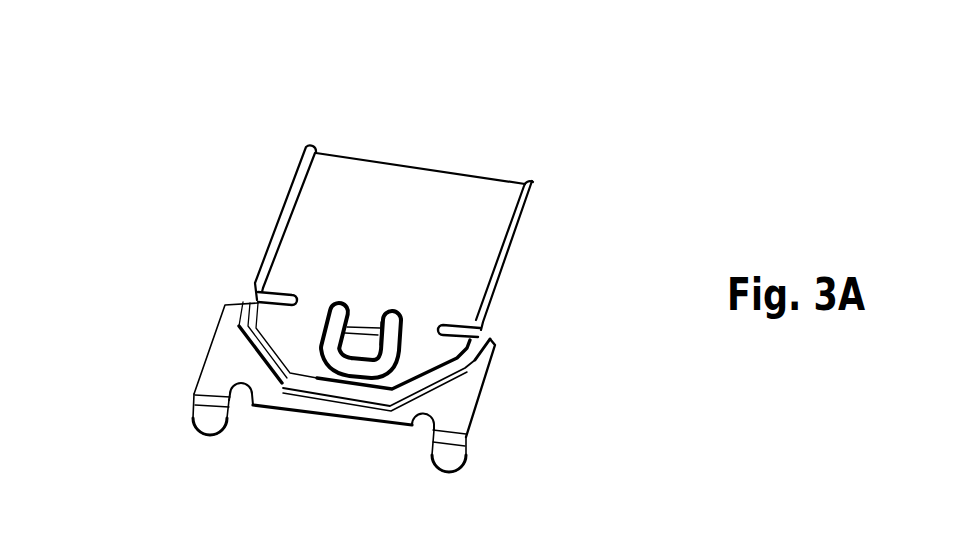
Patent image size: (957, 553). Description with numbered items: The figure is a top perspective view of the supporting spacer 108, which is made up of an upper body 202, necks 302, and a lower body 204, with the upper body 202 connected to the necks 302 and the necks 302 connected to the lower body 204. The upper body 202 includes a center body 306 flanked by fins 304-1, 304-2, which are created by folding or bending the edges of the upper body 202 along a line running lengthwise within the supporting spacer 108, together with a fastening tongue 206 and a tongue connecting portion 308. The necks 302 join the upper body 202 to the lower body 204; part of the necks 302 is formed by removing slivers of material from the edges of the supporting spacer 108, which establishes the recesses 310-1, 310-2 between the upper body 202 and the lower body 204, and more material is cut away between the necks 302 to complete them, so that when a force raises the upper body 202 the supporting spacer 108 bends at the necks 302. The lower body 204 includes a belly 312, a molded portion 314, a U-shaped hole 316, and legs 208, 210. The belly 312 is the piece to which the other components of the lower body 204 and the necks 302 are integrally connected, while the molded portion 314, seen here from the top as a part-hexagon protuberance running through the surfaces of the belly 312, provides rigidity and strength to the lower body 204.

The supporting spacer 108 is at (110, 62).
The upper body 202 is at (540, 133).
The lower body 204 is at (540, 333).
The fastening tongue 206 is at (365, 342).
The leg 208 is at (205, 425).
The leg 210 is at (437, 455).
The necks 302 is at (433, 315).
The fin 304-1 is at (282, 200).
The fin 304-2 is at (495, 247).
The center body 306 is at (397, 222).
The tongue connecting portion 308 is at (365, 318).
The recess 310-1 is at (257, 297).
The recess 310-2 is at (483, 337).
The belly 312 is at (282, 342).
The molded portion 314 is at (277, 390).
The U-shaped hole 316 is at (325, 357).